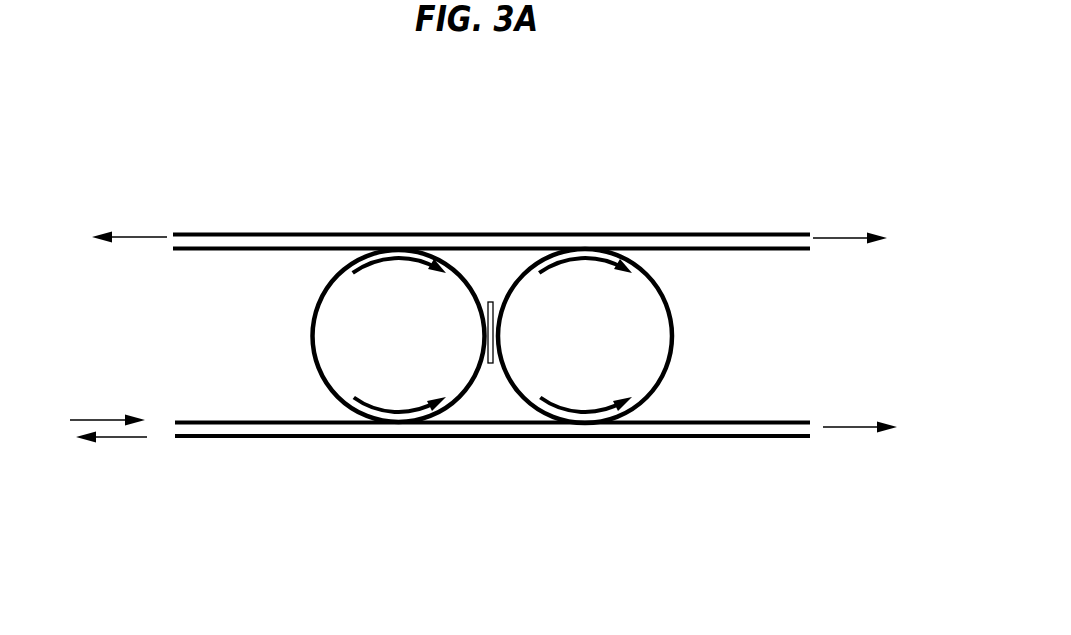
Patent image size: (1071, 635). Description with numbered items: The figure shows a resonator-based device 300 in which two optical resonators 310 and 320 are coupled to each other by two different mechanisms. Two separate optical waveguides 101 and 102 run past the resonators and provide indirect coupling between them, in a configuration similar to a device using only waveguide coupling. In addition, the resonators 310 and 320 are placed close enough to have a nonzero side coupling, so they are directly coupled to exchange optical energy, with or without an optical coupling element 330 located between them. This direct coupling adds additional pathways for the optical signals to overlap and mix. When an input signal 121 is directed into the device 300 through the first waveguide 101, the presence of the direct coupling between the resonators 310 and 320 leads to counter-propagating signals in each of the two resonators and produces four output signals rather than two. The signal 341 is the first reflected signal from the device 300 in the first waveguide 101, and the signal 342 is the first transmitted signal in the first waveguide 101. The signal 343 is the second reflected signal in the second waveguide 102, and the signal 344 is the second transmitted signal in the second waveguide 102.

The device 300 is at (334, 134).
The first waveguide 101 is at (420, 440).
The second waveguide 102 is at (477, 231).
The optical resonator 310 is at (399, 336).
The optical resonator 320 is at (585, 336).
The optical coupling element 330 is at (495, 367).
The input signal 121 is at (115, 418).
The first reflected signal 341 is at (108, 440).
The first transmitted signal 342 is at (852, 430).
The second reflected signal 343 is at (137, 236).
The second transmitted signal 344 is at (843, 240).